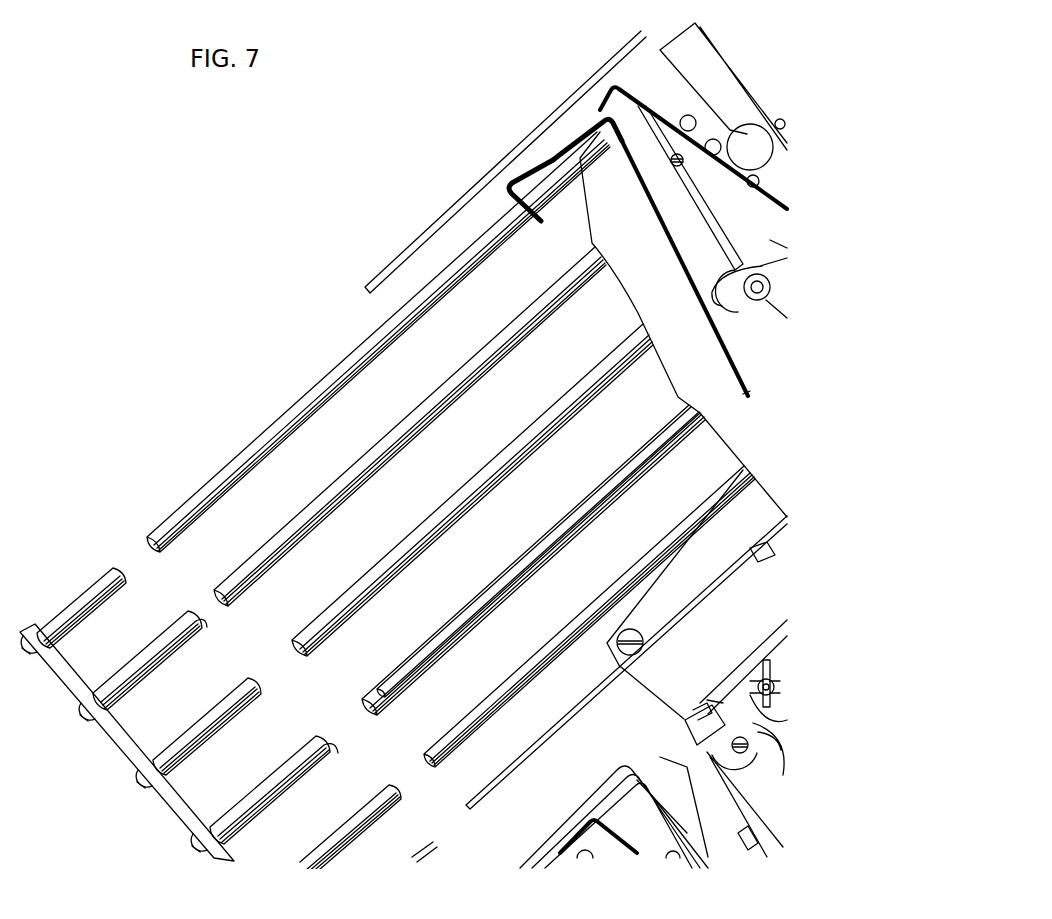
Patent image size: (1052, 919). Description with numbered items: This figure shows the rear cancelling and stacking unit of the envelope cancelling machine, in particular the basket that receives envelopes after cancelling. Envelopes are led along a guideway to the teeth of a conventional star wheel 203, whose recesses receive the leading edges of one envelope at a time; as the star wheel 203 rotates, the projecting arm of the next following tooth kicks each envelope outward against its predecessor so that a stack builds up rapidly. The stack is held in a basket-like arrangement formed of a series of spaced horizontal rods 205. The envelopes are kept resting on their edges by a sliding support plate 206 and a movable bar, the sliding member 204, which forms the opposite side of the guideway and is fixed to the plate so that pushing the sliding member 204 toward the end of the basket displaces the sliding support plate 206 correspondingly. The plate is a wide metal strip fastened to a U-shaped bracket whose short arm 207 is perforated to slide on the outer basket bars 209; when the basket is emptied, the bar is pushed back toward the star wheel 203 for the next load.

The star wheel 203 is at (764, 312).
The sliding member 204 is at (688, 275).
The horizontal rods 205 is at (405, 541).
The sliding support plate 206 is at (545, 172).
The arm 207 is at (535, 229).
The outer basket bars 209 is at (449, 292).